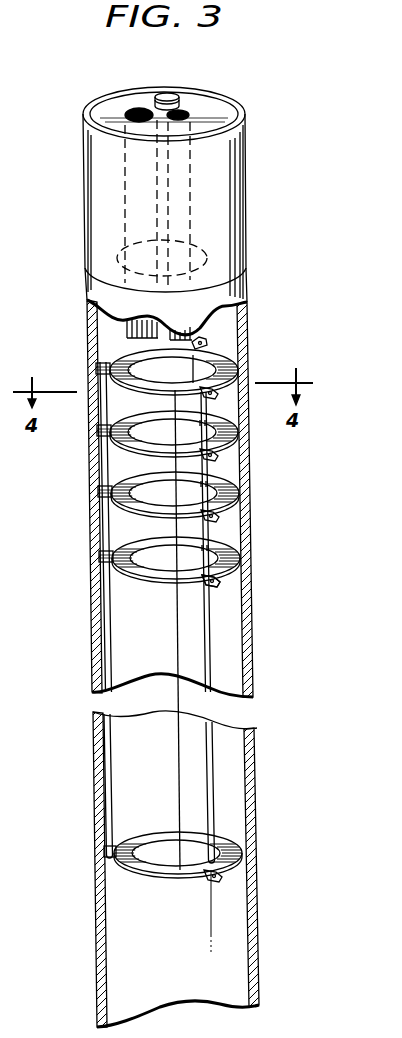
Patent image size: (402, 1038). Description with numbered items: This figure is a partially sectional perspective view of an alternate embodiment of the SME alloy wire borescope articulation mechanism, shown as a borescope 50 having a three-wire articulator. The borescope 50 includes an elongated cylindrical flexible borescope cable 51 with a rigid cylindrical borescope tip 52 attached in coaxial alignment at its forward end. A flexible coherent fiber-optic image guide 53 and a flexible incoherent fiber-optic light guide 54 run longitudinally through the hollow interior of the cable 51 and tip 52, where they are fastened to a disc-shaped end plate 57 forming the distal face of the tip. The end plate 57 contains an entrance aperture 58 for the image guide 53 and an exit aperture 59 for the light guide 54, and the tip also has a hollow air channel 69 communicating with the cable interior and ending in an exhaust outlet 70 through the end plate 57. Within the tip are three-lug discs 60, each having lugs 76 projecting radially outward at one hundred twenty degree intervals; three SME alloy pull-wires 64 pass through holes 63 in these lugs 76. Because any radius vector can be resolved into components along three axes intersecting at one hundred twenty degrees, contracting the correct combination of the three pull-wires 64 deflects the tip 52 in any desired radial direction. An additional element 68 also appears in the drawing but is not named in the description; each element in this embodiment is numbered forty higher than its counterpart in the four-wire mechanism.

The borescope 50 is at (262, 110).
The borescope cable 51 is at (256, 541).
The borescope tip 52 is at (250, 243).
The fiber-optic image guide 53 is at (126, 192).
The fiber-optic light guide 54 is at (190, 194).
The end plate 57 is at (206, 100).
The entrance aperture 58 is at (133, 111).
The exit aperture 59 is at (247, 152).
The three-lug disc 60 is at (242, 377).
The hole 63 is at (216, 512).
The pull-wire 64 is at (92, 528).
The wire 68 is at (183, 873).
The air channel 69 is at (159, 96).
The exhaust outlet 70 is at (171, 96).
The lug 76 is at (222, 590).